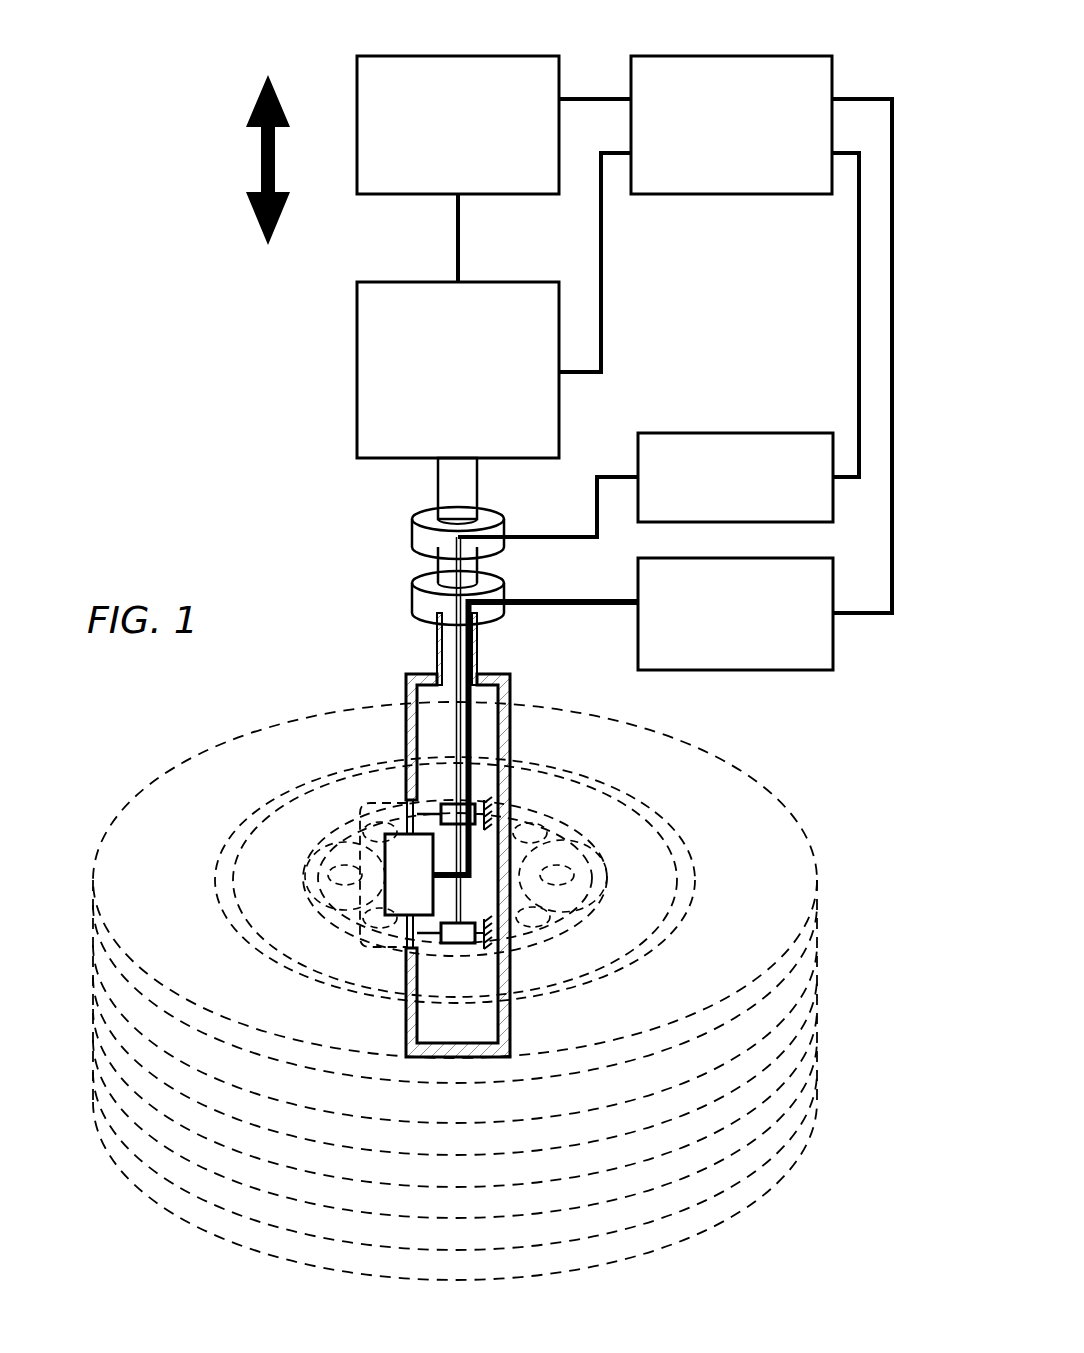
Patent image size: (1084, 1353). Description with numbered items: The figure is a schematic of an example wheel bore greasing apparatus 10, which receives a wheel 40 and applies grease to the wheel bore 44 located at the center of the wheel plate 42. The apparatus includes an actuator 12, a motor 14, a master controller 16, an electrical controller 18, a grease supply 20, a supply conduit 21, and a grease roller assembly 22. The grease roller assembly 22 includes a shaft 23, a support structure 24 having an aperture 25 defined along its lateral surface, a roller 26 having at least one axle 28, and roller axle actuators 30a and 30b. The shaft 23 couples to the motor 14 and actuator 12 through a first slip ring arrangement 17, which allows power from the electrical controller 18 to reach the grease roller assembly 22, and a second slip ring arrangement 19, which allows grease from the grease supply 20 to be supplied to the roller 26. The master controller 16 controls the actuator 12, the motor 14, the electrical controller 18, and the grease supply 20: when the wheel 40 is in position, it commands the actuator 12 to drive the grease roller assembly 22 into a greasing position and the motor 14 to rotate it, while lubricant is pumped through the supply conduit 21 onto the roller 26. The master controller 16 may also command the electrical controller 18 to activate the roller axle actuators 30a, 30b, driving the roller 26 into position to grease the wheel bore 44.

The wheel bore greasing apparatus 10 is at (160, 62).
The actuator 12 is at (522, 56).
The motor 14 is at (522, 282).
The master controller 16 is at (797, 56).
The first slip ring arrangement 17 is at (488, 518).
The electrical controller 18 is at (797, 433).
The second slip ring arrangement 19 is at (488, 583).
The grease supply 20 is at (797, 670).
The supply conduit 21 is at (569, 600).
The grease roller assembly 22 is at (556, 680).
The shaft 23 is at (437, 650).
The support structure 24 is at (406, 1035).
The aperture 25 is at (385, 860).
The roller 26 is at (388, 934).
The axle 28 is at (376, 818).
The roller axle actuator 30a is at (452, 804).
The roller axle actuator 30b is at (458, 943).
The wheel 40 is at (762, 790).
The wheel plate 42 is at (682, 860).
The wheel bore 44 is at (524, 864).